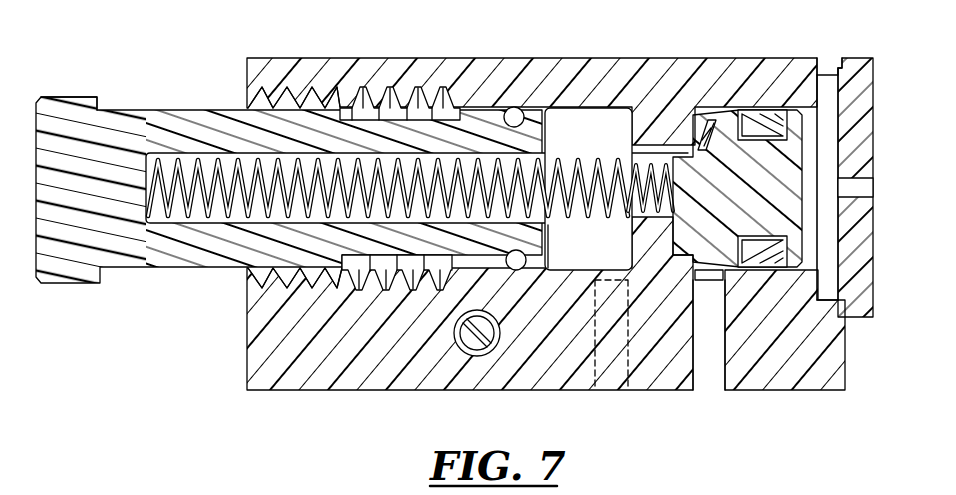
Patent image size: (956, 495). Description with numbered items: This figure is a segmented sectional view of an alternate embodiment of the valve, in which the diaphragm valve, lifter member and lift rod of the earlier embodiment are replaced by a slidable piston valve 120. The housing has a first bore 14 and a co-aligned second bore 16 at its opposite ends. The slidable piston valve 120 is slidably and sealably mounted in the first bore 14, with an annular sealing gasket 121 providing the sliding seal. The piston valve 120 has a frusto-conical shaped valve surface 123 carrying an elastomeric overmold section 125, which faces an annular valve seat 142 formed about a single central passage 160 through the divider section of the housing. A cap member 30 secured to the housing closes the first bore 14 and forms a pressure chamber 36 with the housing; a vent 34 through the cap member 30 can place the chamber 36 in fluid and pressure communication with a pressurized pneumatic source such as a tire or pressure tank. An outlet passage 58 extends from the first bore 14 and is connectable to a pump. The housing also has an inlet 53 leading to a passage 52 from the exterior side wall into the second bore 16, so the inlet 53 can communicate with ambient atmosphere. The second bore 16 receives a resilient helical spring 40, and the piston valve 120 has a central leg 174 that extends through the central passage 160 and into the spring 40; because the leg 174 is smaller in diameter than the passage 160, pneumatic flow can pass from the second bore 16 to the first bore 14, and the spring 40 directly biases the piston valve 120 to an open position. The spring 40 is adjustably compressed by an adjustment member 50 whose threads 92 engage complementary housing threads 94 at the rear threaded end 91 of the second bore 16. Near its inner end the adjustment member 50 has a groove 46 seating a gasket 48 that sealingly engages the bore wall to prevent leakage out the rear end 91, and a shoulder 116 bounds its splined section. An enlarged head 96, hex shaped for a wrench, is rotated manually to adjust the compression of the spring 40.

The first bore 14 is at (705, 107).
The second bore 16 is at (600, 105).
The cap member 30 is at (857, 108).
The vent 34 is at (870, 188).
The pressure chamber 36 is at (808, 240).
The helical spring 40 is at (548, 225).
The groove 46 is at (515, 107).
The gasket 48 is at (511, 270).
The adjustment member 50 is at (163, 110).
The passage 52 is at (603, 323).
The inlet 53 is at (595, 392).
The outlet passage 58 is at (714, 380).
The rear threaded end 91 is at (247, 100).
The threads 92 is at (325, 97).
The housing threads 94 is at (432, 95).
The enlarged head 96 is at (77, 112).
The shoulder 116 is at (357, 297).
The slidable piston valve 120 is at (733, 268).
The annular sealing gasket 121 is at (762, 112).
The frusto-conical shaped valve surface 123 is at (693, 253).
The elastomeric overmold section 125 is at (698, 133).
The annular valve seat 142 is at (693, 237).
The central passage 160 is at (630, 150).
The central leg 174 is at (623, 213).